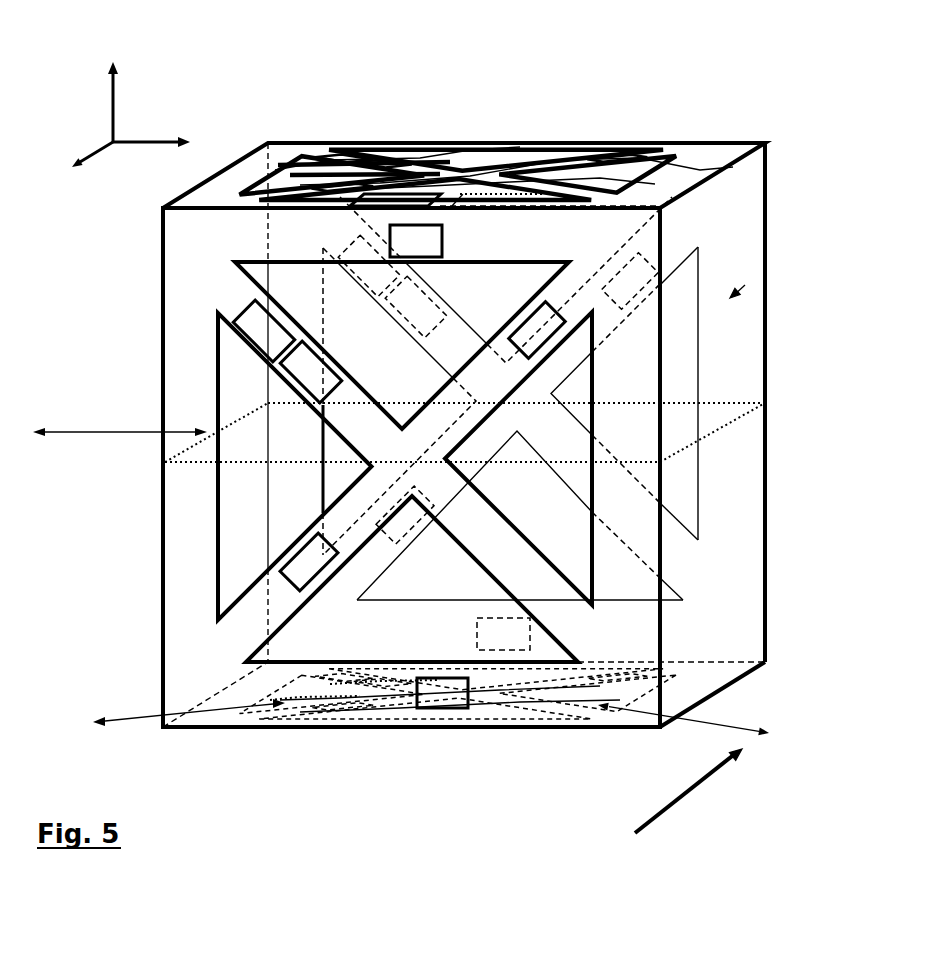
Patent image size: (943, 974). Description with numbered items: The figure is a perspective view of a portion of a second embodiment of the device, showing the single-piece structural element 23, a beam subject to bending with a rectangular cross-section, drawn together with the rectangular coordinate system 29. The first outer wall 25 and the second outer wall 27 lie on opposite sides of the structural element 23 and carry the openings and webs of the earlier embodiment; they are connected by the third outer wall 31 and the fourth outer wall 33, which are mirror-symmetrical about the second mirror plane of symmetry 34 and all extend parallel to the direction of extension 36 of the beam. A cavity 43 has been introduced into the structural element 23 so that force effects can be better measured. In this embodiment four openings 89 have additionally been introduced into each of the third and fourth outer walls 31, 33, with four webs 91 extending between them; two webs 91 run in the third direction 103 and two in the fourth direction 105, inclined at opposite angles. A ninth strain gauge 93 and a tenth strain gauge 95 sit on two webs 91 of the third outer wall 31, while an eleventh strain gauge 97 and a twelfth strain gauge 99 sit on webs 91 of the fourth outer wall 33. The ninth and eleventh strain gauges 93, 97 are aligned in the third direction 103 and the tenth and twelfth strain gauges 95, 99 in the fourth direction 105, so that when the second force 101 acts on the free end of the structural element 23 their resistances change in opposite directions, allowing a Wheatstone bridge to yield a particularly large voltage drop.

The structural element 23 is at (706, 98).
The first outer wall 25 is at (612, 520).
The second outer wall 27 is at (714, 362).
The rectangular coordinate system 29 is at (138, 120).
The third outer wall 31 is at (726, 150).
The fourth outer wall 33 is at (672, 692).
The second mirror plane of symmetry 34 is at (768, 437).
The direction of extension 36 is at (58, 430).
The cavity 43 is at (745, 285).
The openings 89 is at (300, 172).
The webs 91 is at (310, 180).
The ninth strain gauge 93 is at (342, 165).
The tenth strain gauge 95 is at (384, 172).
The eleventh strain gauge 97 is at (306, 703).
The twelfth strain gauge 99 is at (352, 680).
The second force 101 is at (688, 800).
The third direction 103 is at (150, 724).
The fourth direction 105 is at (690, 728).